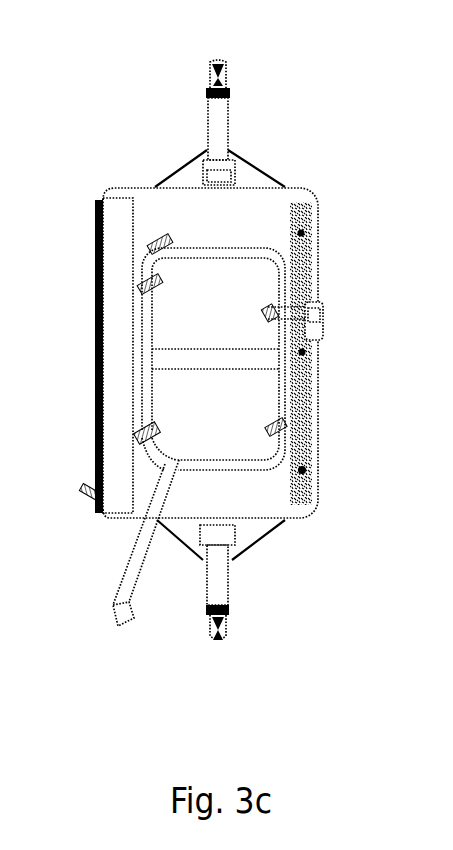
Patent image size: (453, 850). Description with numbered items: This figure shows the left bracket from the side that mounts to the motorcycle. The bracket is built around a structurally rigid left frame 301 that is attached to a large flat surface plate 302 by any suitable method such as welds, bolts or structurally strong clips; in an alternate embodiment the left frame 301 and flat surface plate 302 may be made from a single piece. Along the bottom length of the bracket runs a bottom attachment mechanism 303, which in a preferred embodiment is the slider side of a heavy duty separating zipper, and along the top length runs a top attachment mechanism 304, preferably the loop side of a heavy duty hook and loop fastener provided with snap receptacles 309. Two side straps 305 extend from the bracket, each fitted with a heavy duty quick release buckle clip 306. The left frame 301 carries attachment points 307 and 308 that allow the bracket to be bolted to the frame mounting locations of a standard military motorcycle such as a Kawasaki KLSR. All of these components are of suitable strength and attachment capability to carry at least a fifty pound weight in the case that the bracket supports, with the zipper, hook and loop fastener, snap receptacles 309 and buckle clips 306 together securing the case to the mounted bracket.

The left frame 301 is at (246, 476).
The flat surface plate 302 is at (283, 184).
The bottom attachment mechanism 303 is at (91, 220).
The top attachment mechanism 304 is at (324, 276).
The side strap 305 is at (203, 140).
The buckle clip 306 is at (234, 77).
The attachment point 307 is at (111, 609).
The attachment point 308 is at (328, 314).
The snap receptacle 309 is at (322, 470).